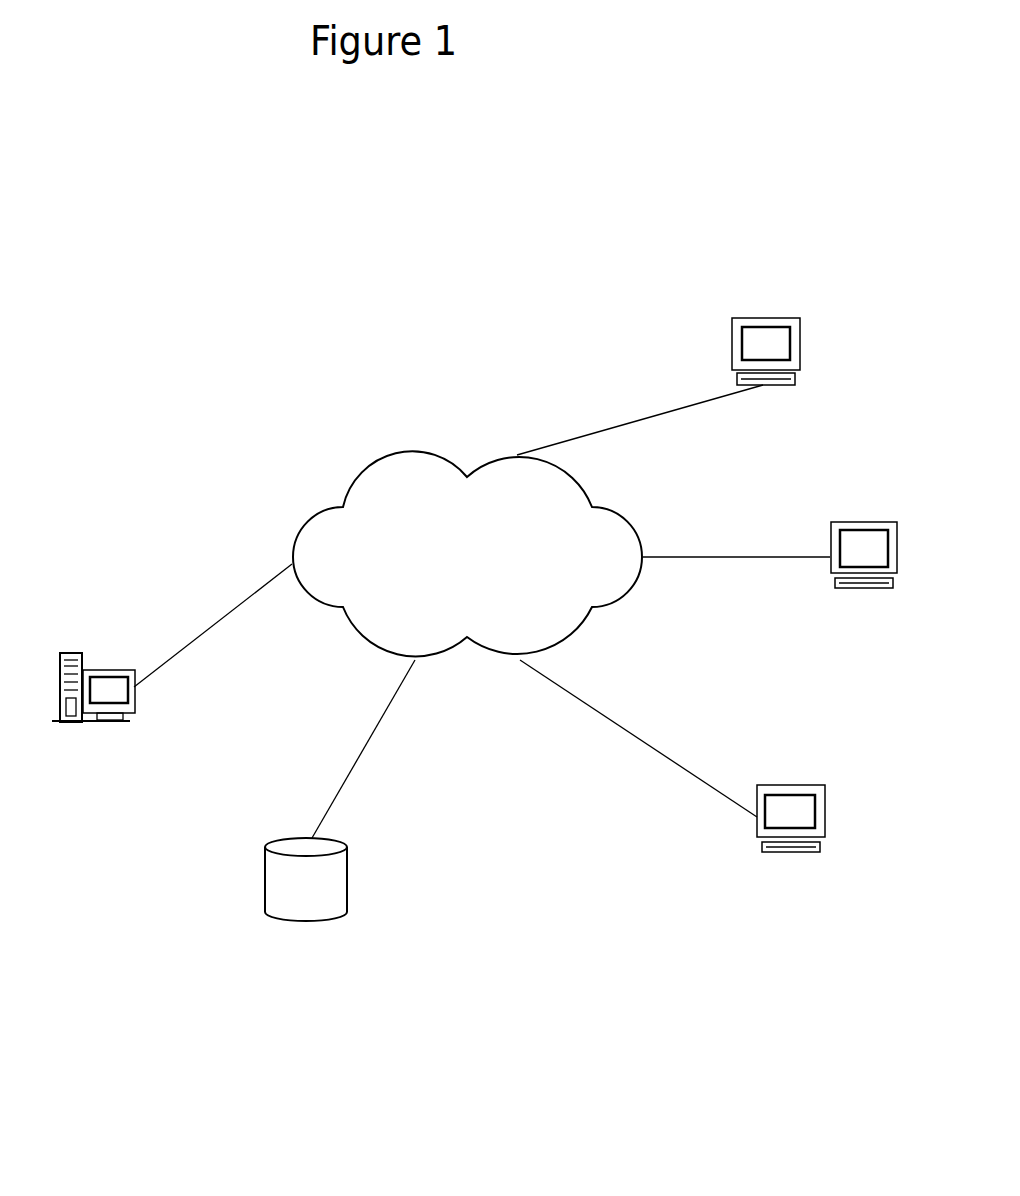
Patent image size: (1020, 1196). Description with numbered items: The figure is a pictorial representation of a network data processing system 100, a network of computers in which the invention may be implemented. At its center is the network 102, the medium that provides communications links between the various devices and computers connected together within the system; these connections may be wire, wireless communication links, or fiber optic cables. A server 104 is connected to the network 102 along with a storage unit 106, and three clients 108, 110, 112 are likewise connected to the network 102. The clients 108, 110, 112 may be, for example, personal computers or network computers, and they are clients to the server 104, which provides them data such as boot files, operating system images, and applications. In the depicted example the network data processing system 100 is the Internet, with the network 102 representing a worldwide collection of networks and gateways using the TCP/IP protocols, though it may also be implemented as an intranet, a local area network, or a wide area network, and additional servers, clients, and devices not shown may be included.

The network data processing system 100 is at (472, 932).
The network 102 is at (453, 567).
The server 104 is at (108, 668).
The storage unit 106 is at (303, 922).
The client 108 is at (767, 318).
The client 110 is at (863, 522).
The client 112 is at (792, 853).